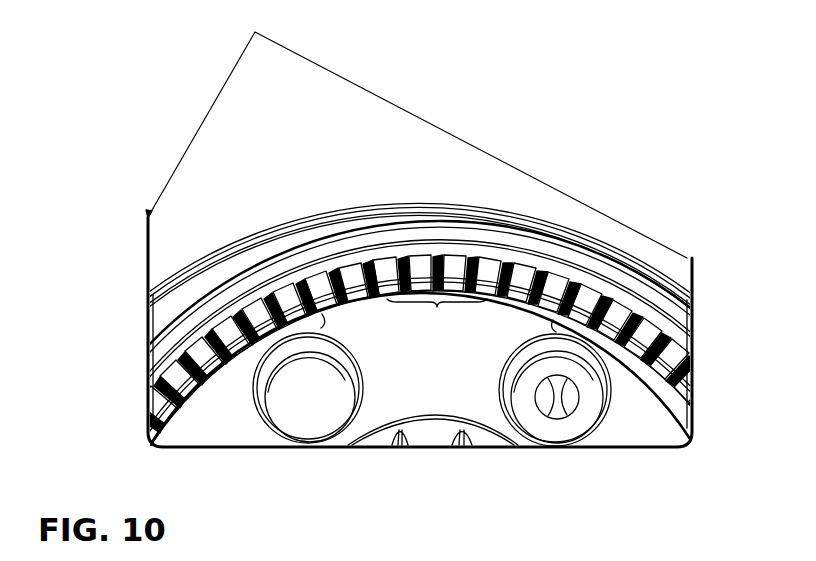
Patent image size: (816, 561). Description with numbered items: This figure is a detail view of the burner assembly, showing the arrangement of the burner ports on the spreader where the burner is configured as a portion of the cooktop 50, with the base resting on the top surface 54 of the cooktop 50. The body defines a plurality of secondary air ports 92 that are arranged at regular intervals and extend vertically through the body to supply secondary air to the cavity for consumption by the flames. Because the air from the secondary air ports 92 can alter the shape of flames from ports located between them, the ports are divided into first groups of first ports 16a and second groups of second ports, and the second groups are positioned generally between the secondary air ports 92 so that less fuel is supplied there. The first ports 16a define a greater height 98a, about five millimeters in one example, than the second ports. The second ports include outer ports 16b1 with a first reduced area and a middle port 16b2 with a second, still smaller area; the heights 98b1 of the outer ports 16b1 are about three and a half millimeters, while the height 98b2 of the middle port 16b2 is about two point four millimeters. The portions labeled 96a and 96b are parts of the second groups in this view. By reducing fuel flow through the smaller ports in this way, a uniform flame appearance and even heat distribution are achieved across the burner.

The cooktop 50 is at (303, 88).
The first ports 16a is at (190, 347).
The outer port 16b1 is at (378, 253).
The middle port 16b2 is at (487, 258).
The heights of first ports 98a is at (340, 270).
The heights of outer second ports 98b1 is at (405, 272).
The height of middle second port 98b2 is at (440, 283).
The flange portion 96a is at (330, 328).
The flange portion 96b is at (437, 308).
The secondary air ports 92 is at (293, 367).
The top surface 54 is at (323, 419).